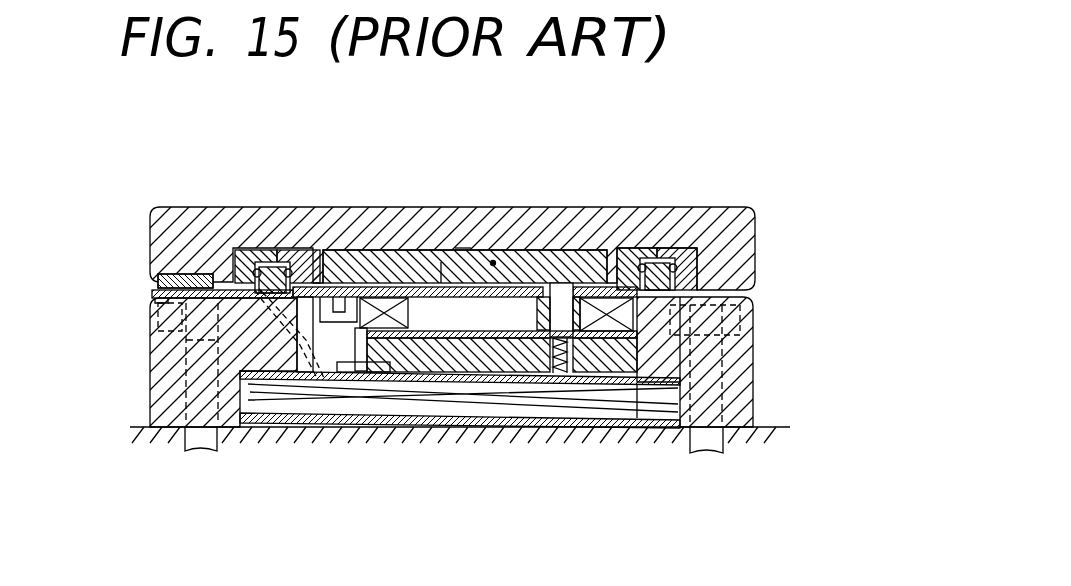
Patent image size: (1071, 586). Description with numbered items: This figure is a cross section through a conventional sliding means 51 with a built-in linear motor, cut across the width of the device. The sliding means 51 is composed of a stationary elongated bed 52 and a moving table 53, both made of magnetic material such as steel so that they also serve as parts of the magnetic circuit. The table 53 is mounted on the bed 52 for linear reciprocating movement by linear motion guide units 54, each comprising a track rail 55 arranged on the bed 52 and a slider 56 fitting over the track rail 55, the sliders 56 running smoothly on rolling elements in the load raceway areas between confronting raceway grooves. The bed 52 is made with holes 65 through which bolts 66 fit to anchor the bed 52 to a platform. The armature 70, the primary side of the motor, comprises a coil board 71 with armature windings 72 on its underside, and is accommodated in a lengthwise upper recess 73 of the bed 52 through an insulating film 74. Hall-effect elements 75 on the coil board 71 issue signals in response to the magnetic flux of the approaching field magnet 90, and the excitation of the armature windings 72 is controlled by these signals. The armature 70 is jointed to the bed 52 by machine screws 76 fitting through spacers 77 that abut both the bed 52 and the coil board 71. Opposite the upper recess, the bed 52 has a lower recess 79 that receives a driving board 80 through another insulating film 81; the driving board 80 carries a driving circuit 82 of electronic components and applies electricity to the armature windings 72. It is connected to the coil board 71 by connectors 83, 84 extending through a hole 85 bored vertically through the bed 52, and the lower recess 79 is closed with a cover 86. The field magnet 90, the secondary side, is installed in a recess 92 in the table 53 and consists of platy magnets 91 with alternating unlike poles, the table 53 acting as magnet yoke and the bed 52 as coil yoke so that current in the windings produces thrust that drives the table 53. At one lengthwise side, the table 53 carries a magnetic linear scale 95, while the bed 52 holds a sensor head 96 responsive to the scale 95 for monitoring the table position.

The sliding means 51 is at (519, 193).
The stationary bed 52 is at (735, 413).
The moving table 53 is at (740, 237).
The linear motion guide unit 54 is at (261, 258).
The track rail 55 is at (283, 262).
The slider 56 is at (247, 250).
The hole 65 is at (195, 368).
The bolt 66 is at (172, 318).
The armature 70 is at (484, 347).
The coil board 71 is at (367, 287).
The armature winding 72 is at (403, 266).
The upper recess 73 is at (533, 300).
The insulating film 74 is at (432, 380).
The Hall-effect element 75 is at (343, 300).
The machine screw 76 is at (572, 298).
The spacer 77 is at (541, 298).
The lower recess 79 is at (354, 375).
The driving board 80 is at (311, 390).
The insulating film 81 is at (393, 416).
The driving circuit 82 is at (465, 407).
The connector 83 is at (313, 290).
The connector 84 is at (318, 362).
The hole 85 is at (330, 343).
The cover 86 is at (648, 427).
The field magnet 90 is at (463, 243).
The platy magnet 91 is at (441, 262).
The recess 92 is at (493, 260).
The magnetic linear scale 95 is at (182, 283).
The sensor head 96 is at (155, 293).